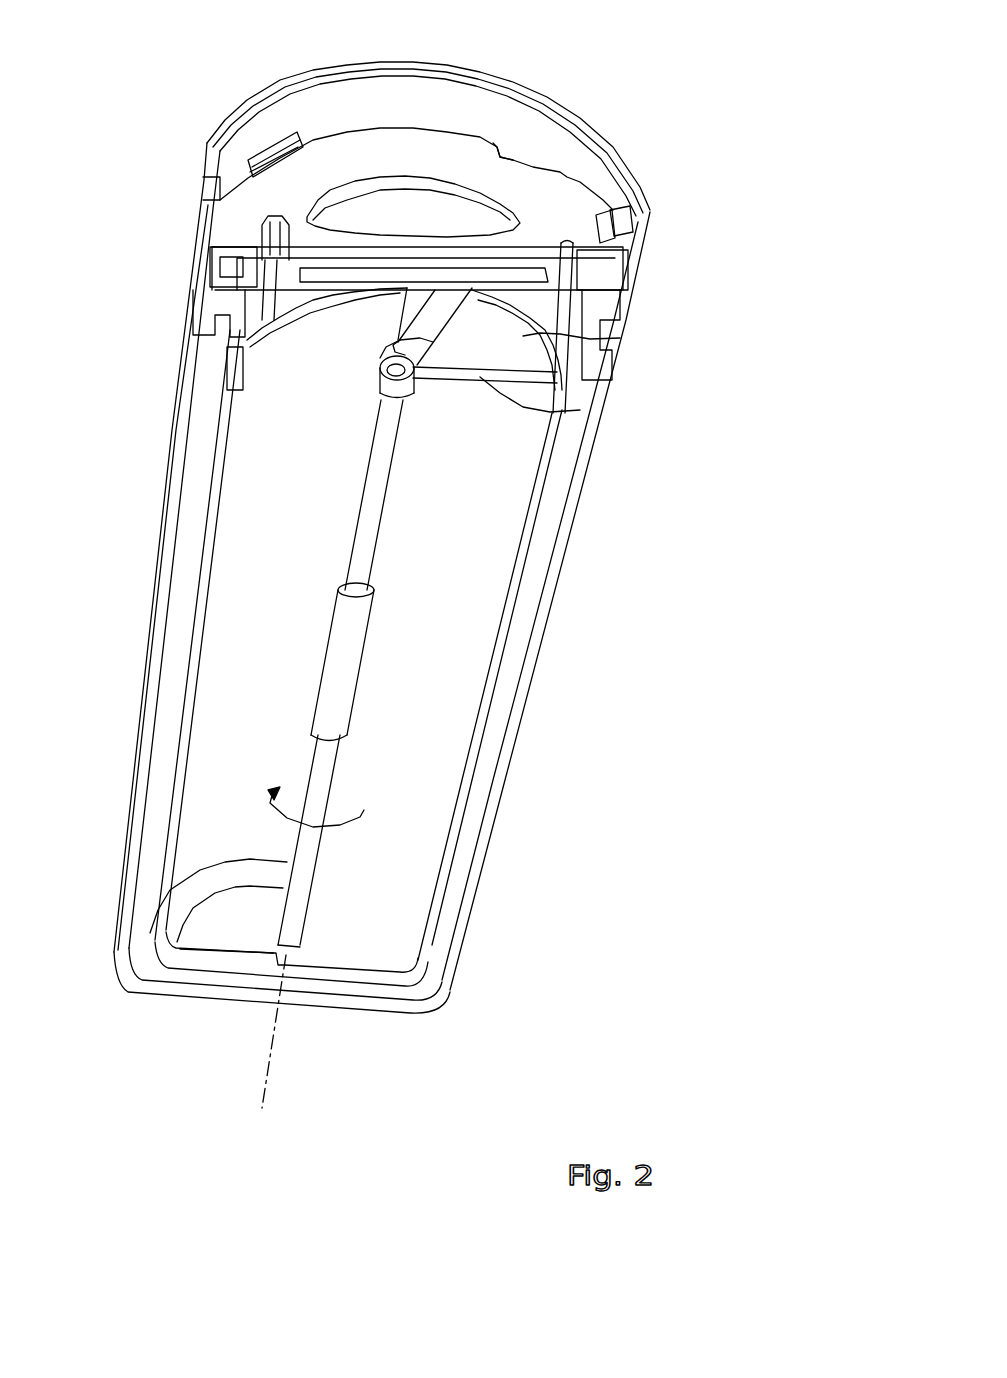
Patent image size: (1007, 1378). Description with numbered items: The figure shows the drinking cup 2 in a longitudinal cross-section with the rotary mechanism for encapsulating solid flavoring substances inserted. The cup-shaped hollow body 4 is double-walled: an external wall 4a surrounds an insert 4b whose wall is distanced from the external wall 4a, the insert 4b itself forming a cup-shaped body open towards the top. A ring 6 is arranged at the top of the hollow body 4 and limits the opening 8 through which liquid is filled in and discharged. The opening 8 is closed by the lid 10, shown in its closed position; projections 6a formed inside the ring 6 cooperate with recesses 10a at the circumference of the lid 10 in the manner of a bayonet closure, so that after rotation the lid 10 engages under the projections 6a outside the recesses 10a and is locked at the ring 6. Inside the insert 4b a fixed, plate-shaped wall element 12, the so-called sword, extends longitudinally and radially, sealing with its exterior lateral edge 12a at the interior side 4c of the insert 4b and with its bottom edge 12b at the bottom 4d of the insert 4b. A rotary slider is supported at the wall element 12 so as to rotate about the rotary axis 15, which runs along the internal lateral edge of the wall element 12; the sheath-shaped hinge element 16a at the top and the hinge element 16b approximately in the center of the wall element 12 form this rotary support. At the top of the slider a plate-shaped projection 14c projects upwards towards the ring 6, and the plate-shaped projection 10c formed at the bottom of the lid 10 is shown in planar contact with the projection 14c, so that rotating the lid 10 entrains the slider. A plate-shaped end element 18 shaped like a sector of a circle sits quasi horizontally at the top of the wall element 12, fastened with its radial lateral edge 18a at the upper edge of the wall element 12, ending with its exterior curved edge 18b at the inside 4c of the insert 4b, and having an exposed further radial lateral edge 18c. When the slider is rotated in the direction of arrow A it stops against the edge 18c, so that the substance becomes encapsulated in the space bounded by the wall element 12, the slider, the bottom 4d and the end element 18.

The drinking cup 2 is at (460, 1053).
The cup-shaped hollow body 4 is at (344, 608).
The external wall 4a is at (550, 601).
The insert 4b is at (540, 601).
The interior side of the insert 4c is at (489, 676).
The bottom of the insert 4d is at (313, 1012).
The ring 6 is at (426, 139).
The projections 6a is at (481, 122).
The opening 8 is at (417, 155).
The lid 10 is at (413, 193).
The recesses 10a is at (564, 117).
The plate-shaped projection of the lid 10c is at (410, 314).
The fixed wall element 12 is at (351, 651).
The exterior lateral edge of the wall element 12a is at (485, 686).
The bottom edge of the wall element 12b is at (292, 931).
The plate-shaped projection of the rotary slider 14c is at (432, 326).
The rotary axis 15 is at (249, 1031).
The hinge element 16a is at (353, 401).
The hinge element 16b is at (329, 673).
The end element 18 is at (485, 359).
The radial lateral edge 18a is at (574, 397).
The exterior curved edge 18b is at (606, 335).
The radial lateral edge 18c is at (363, 367).
The arrow A is at (326, 807).